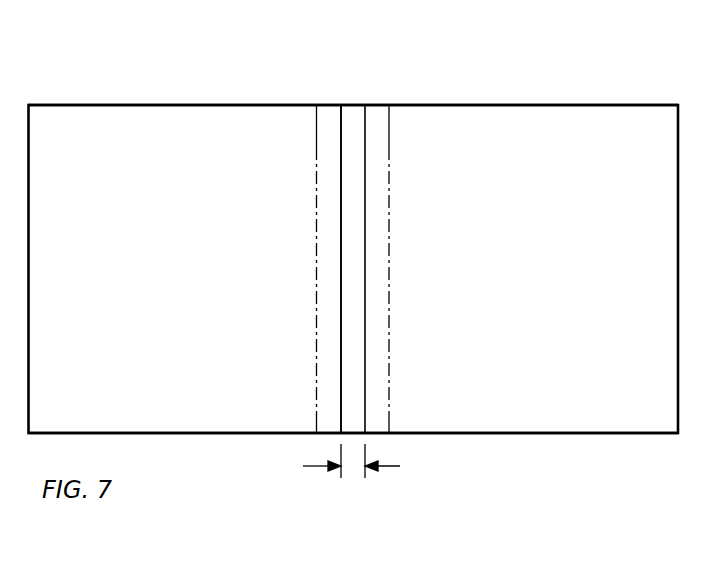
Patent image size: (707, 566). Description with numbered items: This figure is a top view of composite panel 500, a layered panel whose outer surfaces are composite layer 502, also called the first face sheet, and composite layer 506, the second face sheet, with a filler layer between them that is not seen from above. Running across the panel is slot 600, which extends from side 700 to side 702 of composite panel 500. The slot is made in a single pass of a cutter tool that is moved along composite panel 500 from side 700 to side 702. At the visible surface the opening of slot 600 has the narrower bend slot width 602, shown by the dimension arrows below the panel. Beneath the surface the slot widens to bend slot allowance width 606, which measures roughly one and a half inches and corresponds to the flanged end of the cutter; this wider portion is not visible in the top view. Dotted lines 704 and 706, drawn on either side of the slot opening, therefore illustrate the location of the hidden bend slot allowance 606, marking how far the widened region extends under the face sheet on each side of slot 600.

The composite panel 500 is at (102, 57).
The composite layer 502 is at (195, 285).
The composite layer 506 is at (350, 385).
The slot 600 is at (357, 168).
The bend slot width 602 is at (352, 478).
The bend slot allowance width 606 is at (354, 110).
The side 700 is at (520, 103).
The side 702 is at (520, 435).
The dotted line 704 is at (316, 268).
The dotted line 706 is at (389, 270).